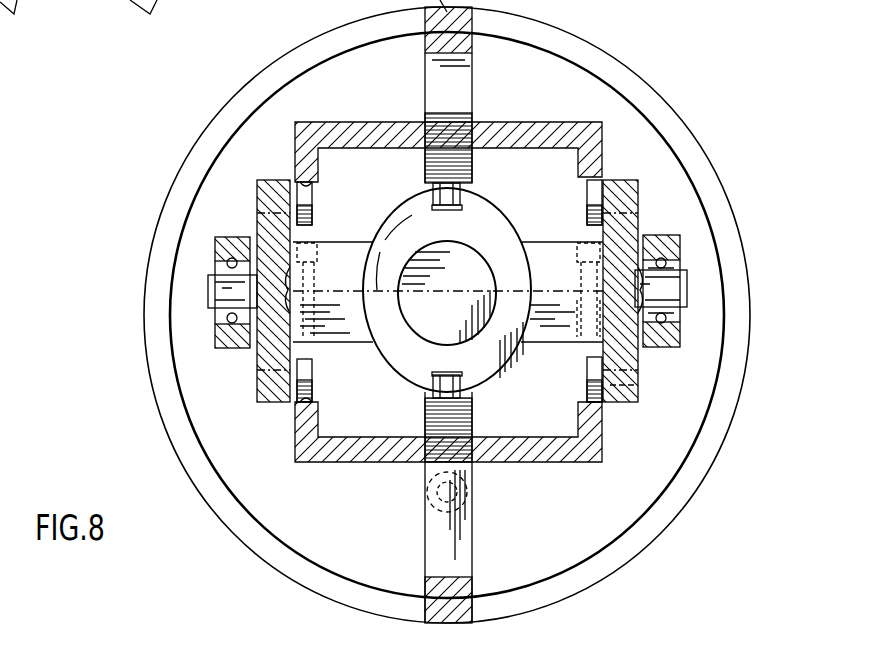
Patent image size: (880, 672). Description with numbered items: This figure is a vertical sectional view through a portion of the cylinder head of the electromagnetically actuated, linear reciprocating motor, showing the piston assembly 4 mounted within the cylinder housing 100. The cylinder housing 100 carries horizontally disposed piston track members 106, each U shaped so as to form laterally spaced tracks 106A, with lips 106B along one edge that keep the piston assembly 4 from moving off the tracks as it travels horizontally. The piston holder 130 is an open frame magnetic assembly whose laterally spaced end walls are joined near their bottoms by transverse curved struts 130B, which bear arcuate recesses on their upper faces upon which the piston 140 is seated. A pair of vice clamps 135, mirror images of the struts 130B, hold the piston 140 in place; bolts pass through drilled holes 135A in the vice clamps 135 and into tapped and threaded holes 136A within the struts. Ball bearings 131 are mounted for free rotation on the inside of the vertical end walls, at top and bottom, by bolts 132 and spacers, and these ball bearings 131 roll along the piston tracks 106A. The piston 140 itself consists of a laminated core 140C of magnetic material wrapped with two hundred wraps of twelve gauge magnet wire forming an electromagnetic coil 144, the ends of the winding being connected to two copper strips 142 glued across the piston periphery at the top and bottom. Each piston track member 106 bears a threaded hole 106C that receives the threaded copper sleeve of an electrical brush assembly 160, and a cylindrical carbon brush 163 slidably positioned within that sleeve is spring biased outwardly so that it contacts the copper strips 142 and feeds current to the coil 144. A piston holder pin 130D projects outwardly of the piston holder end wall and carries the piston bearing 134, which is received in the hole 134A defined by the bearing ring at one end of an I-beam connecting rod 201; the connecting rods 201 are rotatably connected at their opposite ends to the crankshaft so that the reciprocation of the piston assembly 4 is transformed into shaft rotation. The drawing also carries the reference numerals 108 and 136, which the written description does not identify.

The piston assembly 4 is at (630, 147).
The cylinder housing 100 is at (708, 148).
The piston track member 106 is at (493, 120).
The tracks 106A is at (306, 182).
The lips 106B is at (316, 401).
The holes 106C is at (425, 462).
The outer ring 108 is at (577, 48).
The piston holder 130 is at (644, 376).
The transverse curved struts 130B is at (575, 343).
The piston holder pin 130D is at (662, 285).
The ball bearings 131 is at (310, 200).
The bolts 132 is at (643, 385).
The piston bearing 134 is at (677, 313).
The hole 134A is at (678, 343).
The vice clamp 135 is at (510, 233).
The drilled holes 135A is at (590, 268).
The side plate 136 is at (640, 222).
The tapped and threaded holes 136A is at (590, 328).
The piston 140 is at (378, 346).
The laminated core 140C is at (480, 316).
The copper strips 142 is at (465, 206).
The electromagnetic coil 144 is at (380, 273).
The electrical brush assembly 160 is at (477, 172).
The carbon brush 163 is at (438, 193).
The I-beam connecting rods 201 is at (228, 350).